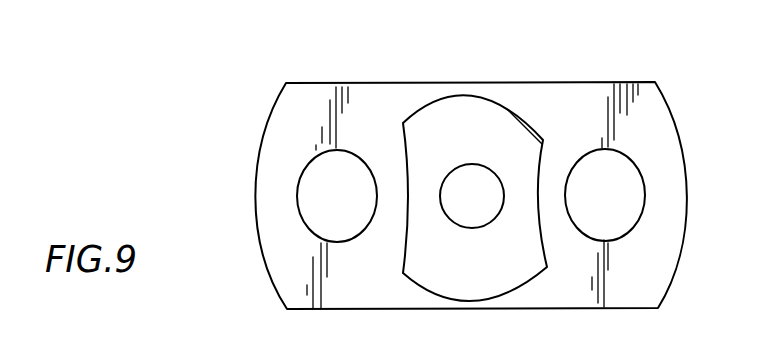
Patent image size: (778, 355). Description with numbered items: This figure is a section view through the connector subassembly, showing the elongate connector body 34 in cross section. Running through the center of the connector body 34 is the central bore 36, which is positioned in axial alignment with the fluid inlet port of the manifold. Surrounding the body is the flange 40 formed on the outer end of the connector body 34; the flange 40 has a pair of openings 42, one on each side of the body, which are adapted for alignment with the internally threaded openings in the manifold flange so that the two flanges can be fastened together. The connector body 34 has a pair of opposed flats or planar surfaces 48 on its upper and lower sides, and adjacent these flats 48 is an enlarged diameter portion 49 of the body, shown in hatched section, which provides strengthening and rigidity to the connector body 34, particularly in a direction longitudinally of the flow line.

The connector body 34 is at (467, 77).
The central bore 36 is at (486, 203).
The flange 40 is at (648, 117).
The openings 42 is at (323, 203).
The flats 48 is at (401, 122).
The enlarged diameter portion 49 is at (428, 273).